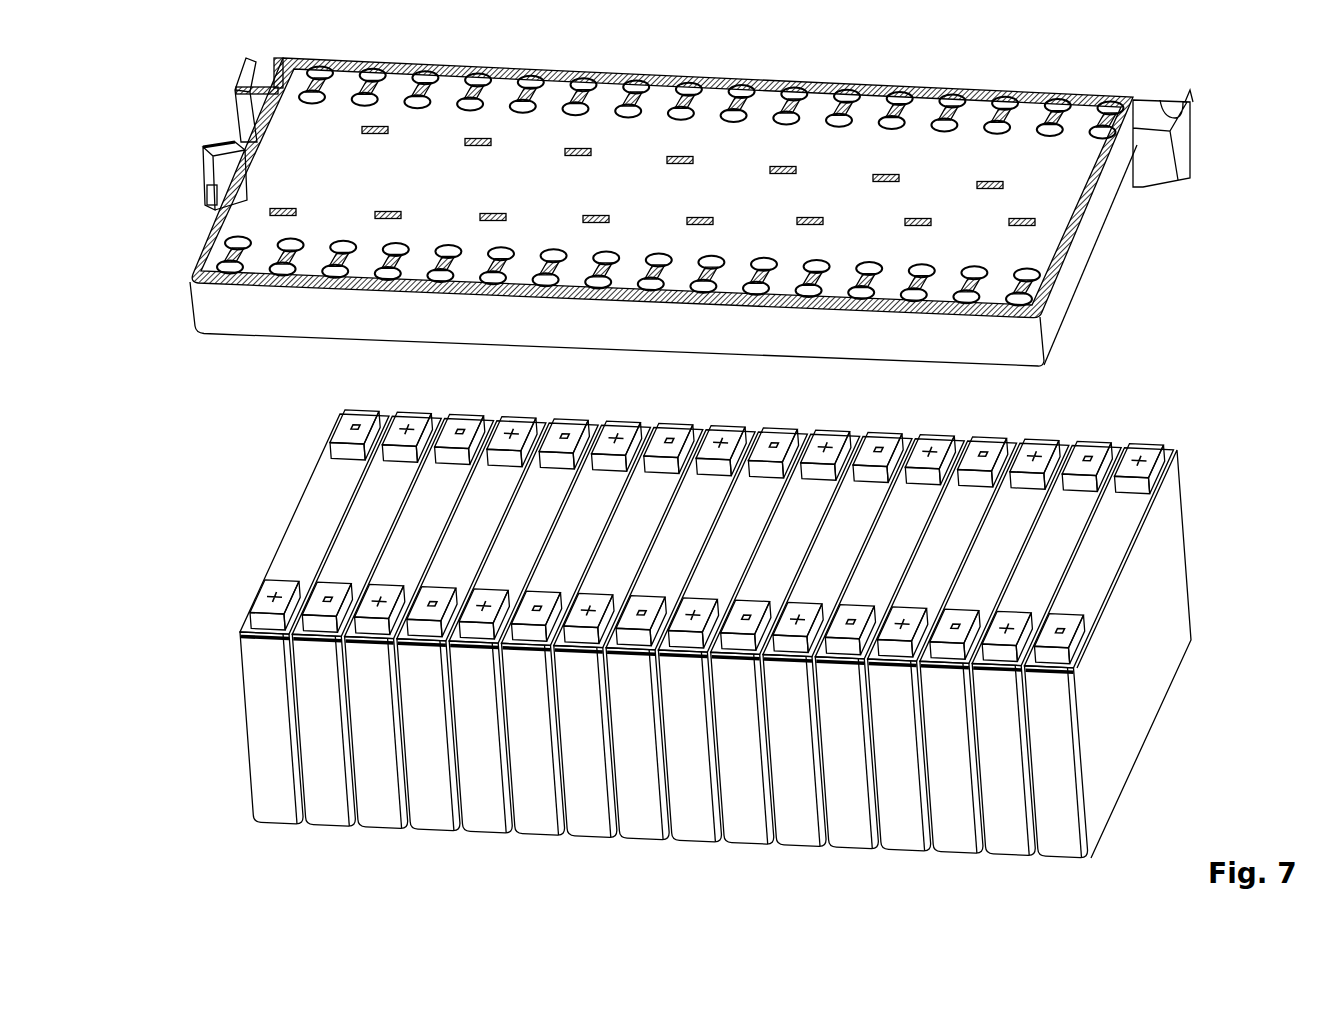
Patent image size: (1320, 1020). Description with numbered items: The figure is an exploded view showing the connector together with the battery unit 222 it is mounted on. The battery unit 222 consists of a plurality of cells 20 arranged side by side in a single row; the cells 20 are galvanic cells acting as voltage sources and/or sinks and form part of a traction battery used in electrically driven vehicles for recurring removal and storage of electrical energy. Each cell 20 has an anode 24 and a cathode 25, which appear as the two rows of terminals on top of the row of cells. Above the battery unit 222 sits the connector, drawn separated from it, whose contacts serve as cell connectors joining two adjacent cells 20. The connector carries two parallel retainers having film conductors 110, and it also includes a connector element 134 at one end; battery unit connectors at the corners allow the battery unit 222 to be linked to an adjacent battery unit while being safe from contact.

The film conductor 110 is at (654, 212).
The connector element 134 is at (204, 158).
The cell 20 is at (742, 643).
The battery unit 222 is at (742, 643).
The anode 24 is at (1142, 447).
The cathode 25 is at (1084, 623).